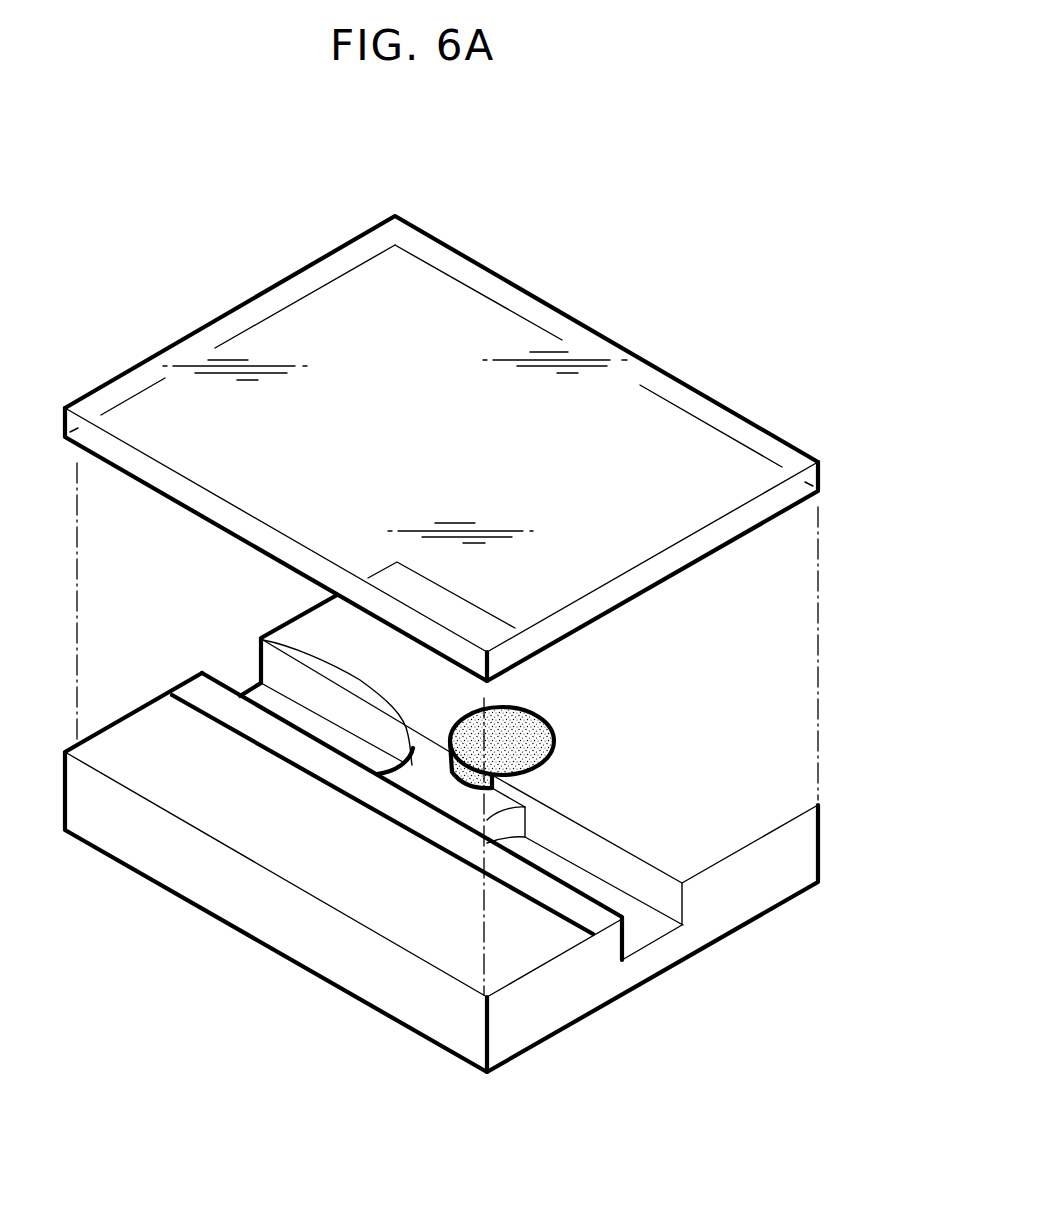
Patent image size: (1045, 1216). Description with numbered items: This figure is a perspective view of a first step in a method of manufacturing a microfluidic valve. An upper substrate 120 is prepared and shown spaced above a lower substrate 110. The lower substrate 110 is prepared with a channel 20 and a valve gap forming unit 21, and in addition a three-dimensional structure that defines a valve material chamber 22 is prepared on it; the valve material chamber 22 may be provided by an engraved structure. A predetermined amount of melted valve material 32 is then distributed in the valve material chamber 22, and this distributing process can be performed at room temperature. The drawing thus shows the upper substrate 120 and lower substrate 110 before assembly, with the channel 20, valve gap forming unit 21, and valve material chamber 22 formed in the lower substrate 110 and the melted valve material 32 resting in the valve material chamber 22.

The upper substrate 120 is at (820, 474).
The lower substrate 110 is at (818, 852).
The channel 20 is at (640, 925).
The valve gap forming unit 21 is at (283, 636).
The valve material chamber 22 is at (553, 760).
The melted valve material 32 is at (543, 722).